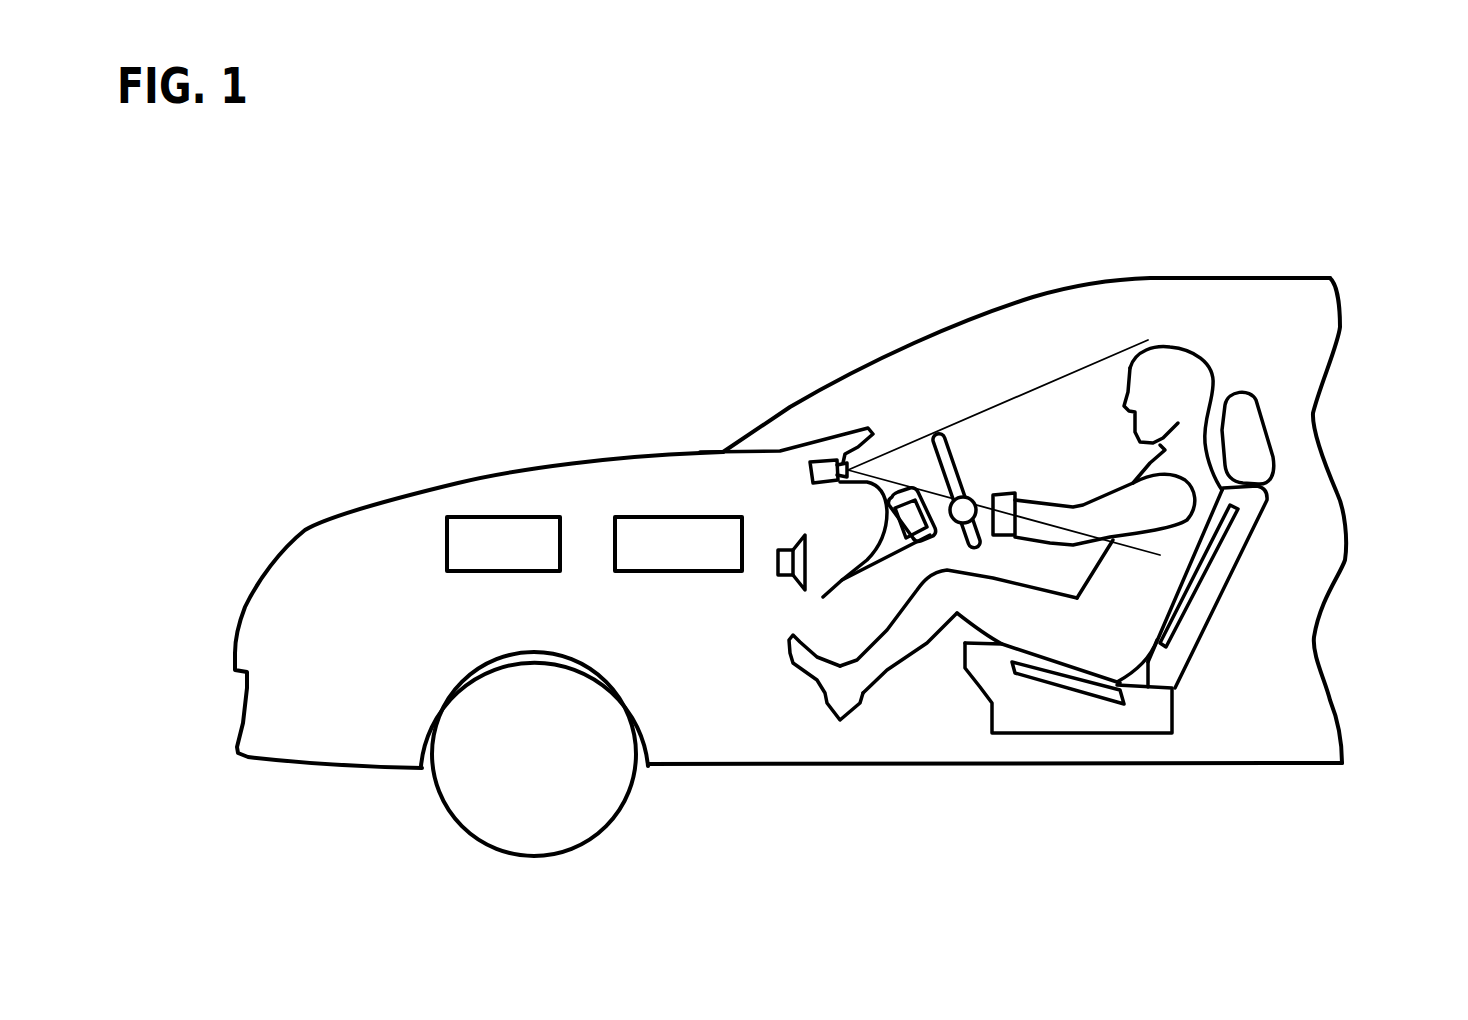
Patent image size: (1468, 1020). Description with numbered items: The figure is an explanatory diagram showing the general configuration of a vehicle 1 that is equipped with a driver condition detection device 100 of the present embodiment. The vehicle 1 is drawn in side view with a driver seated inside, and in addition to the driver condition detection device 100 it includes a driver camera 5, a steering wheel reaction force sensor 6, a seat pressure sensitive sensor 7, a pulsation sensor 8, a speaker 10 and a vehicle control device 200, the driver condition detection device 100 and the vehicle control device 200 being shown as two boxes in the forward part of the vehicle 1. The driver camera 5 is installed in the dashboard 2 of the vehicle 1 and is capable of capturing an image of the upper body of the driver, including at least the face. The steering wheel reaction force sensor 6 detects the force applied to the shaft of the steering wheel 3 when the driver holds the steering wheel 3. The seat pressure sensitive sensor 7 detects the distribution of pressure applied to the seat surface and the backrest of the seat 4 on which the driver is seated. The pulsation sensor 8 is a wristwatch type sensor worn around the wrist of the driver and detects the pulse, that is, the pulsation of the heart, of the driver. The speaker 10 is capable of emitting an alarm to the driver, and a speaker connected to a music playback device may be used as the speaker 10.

The vehicle 1 is at (1240, 278).
The dashboard 2 is at (833, 432).
The steering wheel 3 is at (946, 443).
The seat 4 is at (1268, 526).
The driver camera 5 is at (820, 461).
The steering wheel reaction force sensor 6 is at (905, 522).
The seat pressure sensitive sensor 7 is at (1188, 620).
The pulsation sensor 8 is at (1000, 537).
The speaker 10 is at (778, 567).
The driver condition detection device 100 is at (669, 516).
The vehicle control device 200 is at (493, 516).